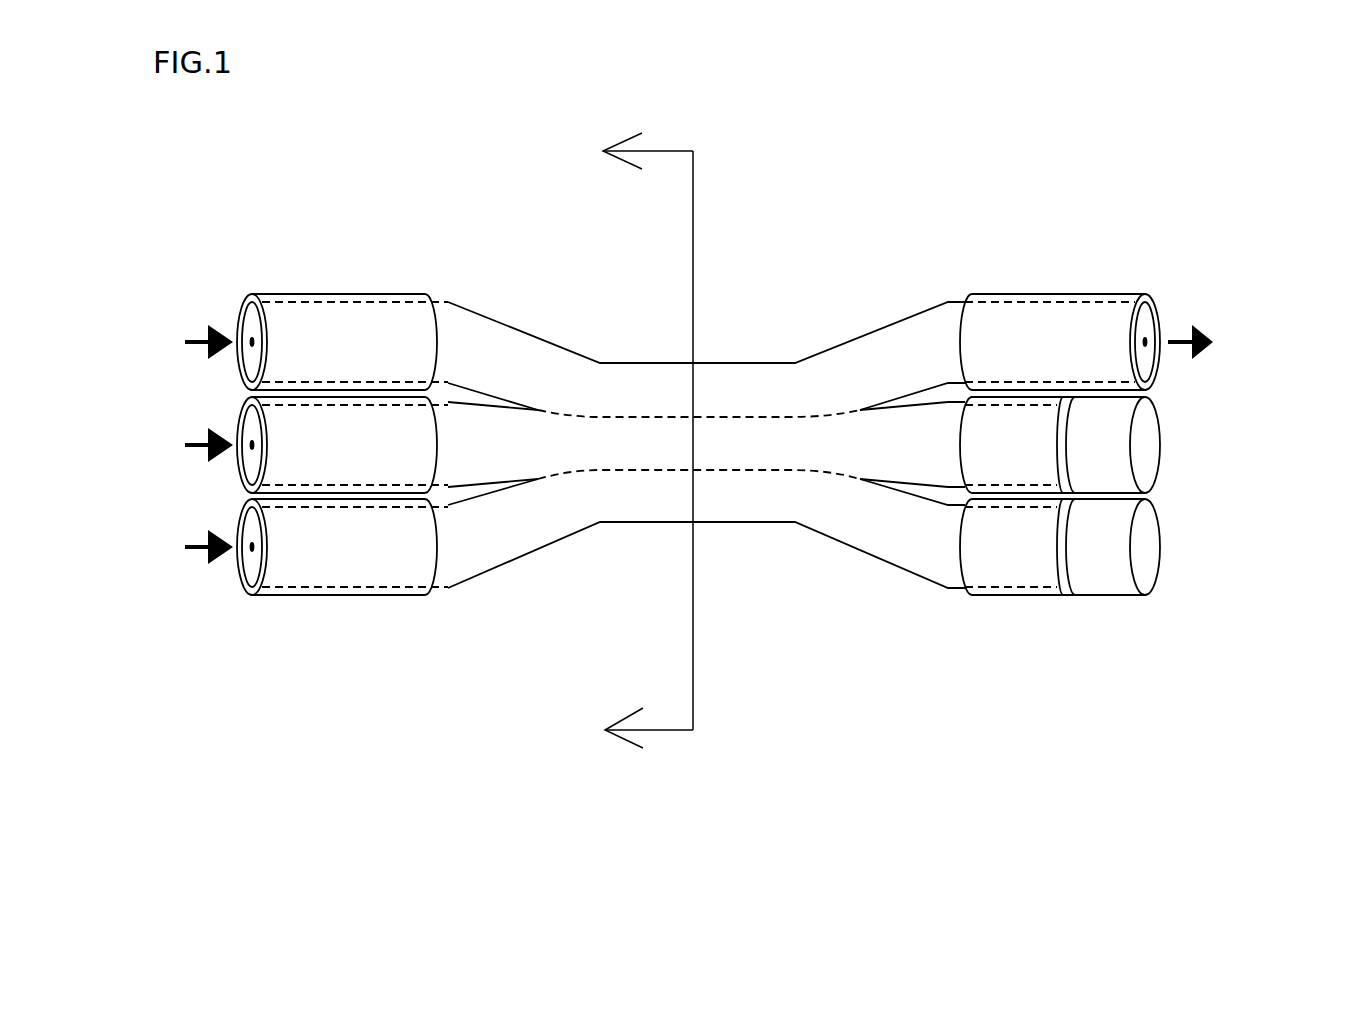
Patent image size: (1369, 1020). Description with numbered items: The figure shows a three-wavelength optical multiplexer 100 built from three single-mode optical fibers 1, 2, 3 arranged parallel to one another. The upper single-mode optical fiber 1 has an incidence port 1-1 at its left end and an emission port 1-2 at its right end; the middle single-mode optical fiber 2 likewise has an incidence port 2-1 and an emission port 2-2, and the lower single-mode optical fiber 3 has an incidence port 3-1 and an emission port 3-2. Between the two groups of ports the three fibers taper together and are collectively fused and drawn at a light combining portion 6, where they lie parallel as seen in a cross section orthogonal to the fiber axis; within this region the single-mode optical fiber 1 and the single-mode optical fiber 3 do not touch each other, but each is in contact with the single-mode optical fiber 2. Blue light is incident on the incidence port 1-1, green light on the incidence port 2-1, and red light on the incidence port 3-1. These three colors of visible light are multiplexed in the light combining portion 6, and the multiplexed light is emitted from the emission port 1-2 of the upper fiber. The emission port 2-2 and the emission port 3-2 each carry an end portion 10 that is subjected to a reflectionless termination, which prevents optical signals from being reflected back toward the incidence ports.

The three-wavelength optical multiplexer 100 is at (922, 123).
The single-mode optical fiber 1 is at (283, 298).
The incidence port 1-1 is at (233, 312).
The emission port 1-2 is at (1183, 293).
The single-mode optical fiber 2 is at (317, 403).
The incidence port 2-1 is at (232, 427).
The emission port 2-2 is at (1182, 475).
The single-mode optical fiber 3 is at (315, 590).
The incidence port 3-1 is at (230, 597).
The emission port 3-2 is at (1183, 570).
The light combining portion 6 is at (723, 338).
The end portion 10 is at (1150, 423).